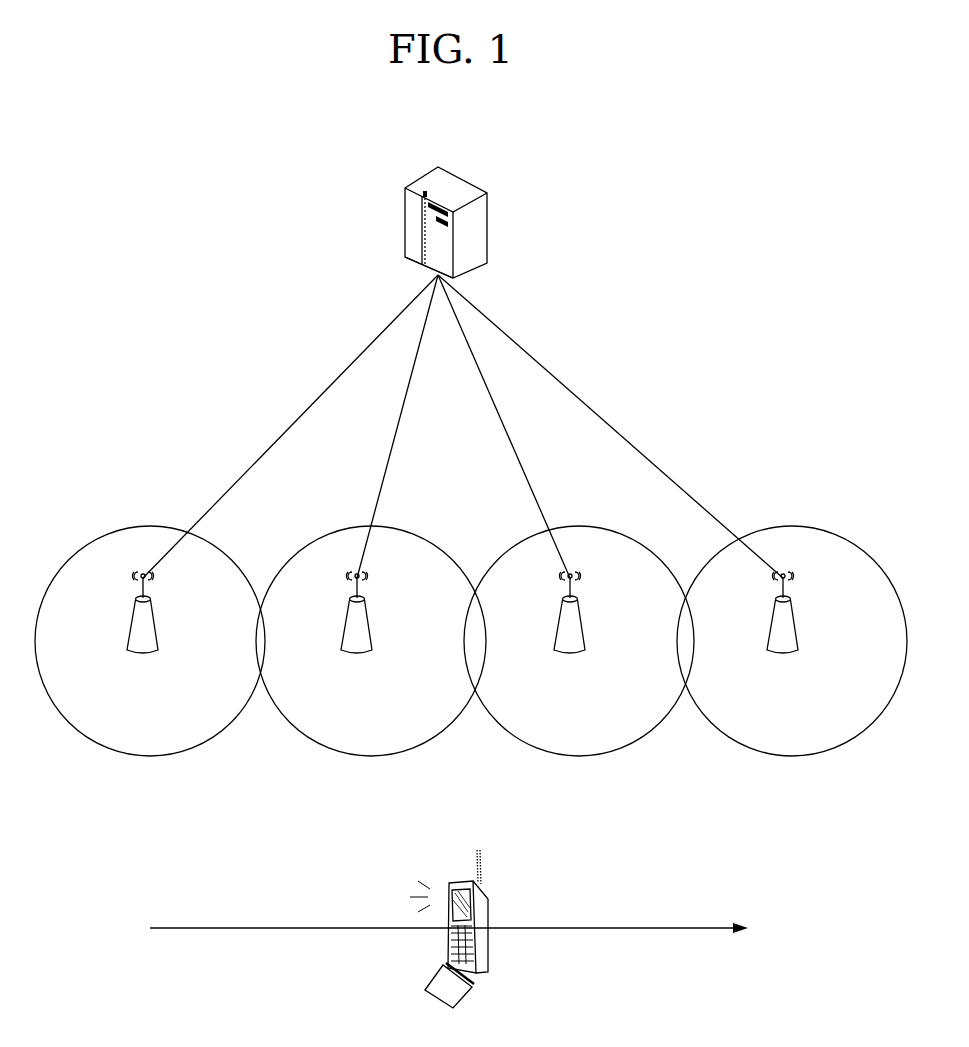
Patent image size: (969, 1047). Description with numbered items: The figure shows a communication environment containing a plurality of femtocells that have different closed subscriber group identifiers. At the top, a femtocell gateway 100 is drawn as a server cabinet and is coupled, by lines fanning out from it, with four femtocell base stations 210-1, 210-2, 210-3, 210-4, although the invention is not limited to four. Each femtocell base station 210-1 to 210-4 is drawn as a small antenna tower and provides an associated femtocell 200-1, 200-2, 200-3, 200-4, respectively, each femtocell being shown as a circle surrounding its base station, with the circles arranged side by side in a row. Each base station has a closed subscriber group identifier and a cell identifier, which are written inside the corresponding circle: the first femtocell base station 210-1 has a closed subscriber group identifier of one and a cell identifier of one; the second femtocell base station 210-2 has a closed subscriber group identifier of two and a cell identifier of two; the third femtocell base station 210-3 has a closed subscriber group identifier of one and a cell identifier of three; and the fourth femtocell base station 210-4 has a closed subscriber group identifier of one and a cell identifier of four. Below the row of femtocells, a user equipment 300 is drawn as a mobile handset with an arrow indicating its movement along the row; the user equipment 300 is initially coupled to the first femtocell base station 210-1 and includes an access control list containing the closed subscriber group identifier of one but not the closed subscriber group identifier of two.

The femtocell gateway 100 is at (453, 175).
The first femtocell 200-1 is at (120, 525).
The second femtocell 200-2 is at (333, 525).
The third femtocell 200-3 is at (605, 525).
The fourth femtocell 200-4 is at (812, 525).
The first femtocell base station 210-1 is at (155, 610).
The second femtocell base station 210-2 is at (368, 612).
The third femtocell base station 210-3 is at (582, 612).
The fourth femtocell base station 210-4 is at (795, 612).
The user equipment 300 is at (490, 953).